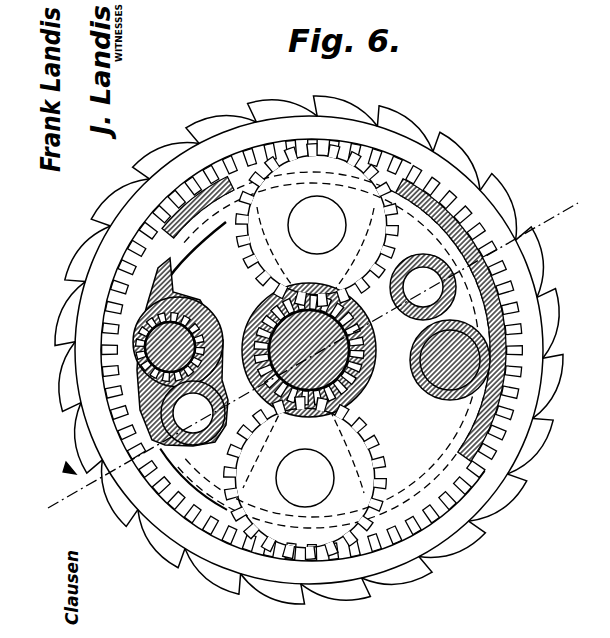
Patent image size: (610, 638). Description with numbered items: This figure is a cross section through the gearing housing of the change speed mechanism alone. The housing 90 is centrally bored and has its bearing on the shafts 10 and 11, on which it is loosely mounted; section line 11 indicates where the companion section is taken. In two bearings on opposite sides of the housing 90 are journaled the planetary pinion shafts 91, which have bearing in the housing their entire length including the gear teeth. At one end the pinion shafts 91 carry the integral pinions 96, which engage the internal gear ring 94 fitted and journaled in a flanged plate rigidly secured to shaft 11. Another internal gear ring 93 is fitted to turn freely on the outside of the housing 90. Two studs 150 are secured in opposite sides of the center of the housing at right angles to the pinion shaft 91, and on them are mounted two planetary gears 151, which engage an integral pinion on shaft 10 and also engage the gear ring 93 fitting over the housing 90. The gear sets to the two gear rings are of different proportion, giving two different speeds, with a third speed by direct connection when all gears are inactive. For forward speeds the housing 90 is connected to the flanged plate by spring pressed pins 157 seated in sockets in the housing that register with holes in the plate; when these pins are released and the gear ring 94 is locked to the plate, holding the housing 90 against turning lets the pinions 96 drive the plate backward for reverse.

The shaft 10 is at (365, 347).
The shaft 11 is at (313, 351).
The housing 90 is at (328, 350).
The planetary pinion shaft 91 is at (411, 381).
The internal gear ring 93 is at (309, 350).
The internal gear ring 94 is at (146, 306).
The pinion 96 is at (217, 327).
The stud 150 is at (335, 232).
The planetary gear 151 is at (223, 400).
The spring pressed pin 157 is at (366, 324).